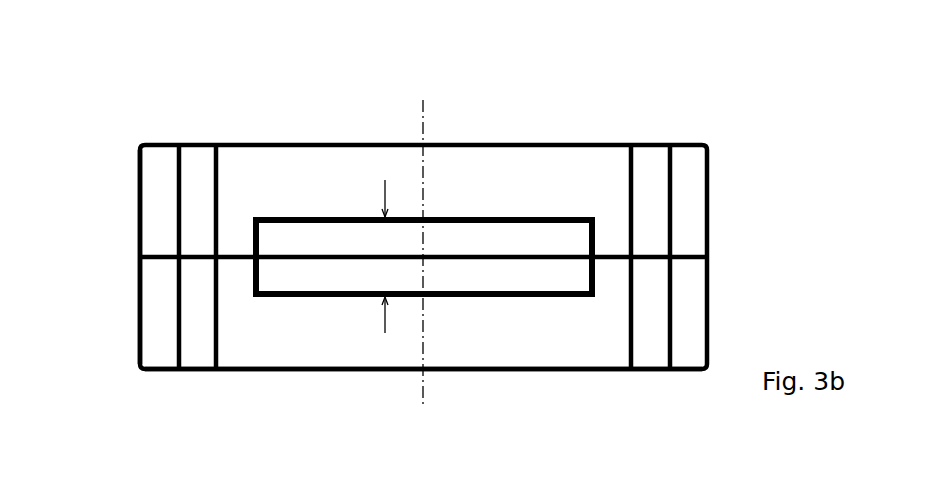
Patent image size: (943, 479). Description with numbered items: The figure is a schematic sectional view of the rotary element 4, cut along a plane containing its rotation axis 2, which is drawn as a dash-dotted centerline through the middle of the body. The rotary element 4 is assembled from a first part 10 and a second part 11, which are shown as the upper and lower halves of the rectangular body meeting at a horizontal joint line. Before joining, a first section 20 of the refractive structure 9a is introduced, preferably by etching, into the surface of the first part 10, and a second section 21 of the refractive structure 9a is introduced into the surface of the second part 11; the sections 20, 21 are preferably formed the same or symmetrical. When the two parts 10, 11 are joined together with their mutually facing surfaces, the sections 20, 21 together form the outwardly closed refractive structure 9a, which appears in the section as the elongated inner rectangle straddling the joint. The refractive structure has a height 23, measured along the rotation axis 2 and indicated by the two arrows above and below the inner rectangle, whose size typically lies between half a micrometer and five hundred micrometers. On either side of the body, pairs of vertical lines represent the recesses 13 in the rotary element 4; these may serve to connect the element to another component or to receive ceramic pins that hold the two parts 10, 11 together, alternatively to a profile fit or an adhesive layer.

The rotation axis 2 is at (468, 223).
The rotary element 4 is at (113, 131).
The refractive structure 9a is at (485, 246).
The first part 10 is at (139, 228).
The second part 11 is at (139, 328).
The recesses 13 is at (197, 228).
The first section 20 is at (442, 246).
The second section 21 is at (389, 365).
The height 23 is at (383, 196).